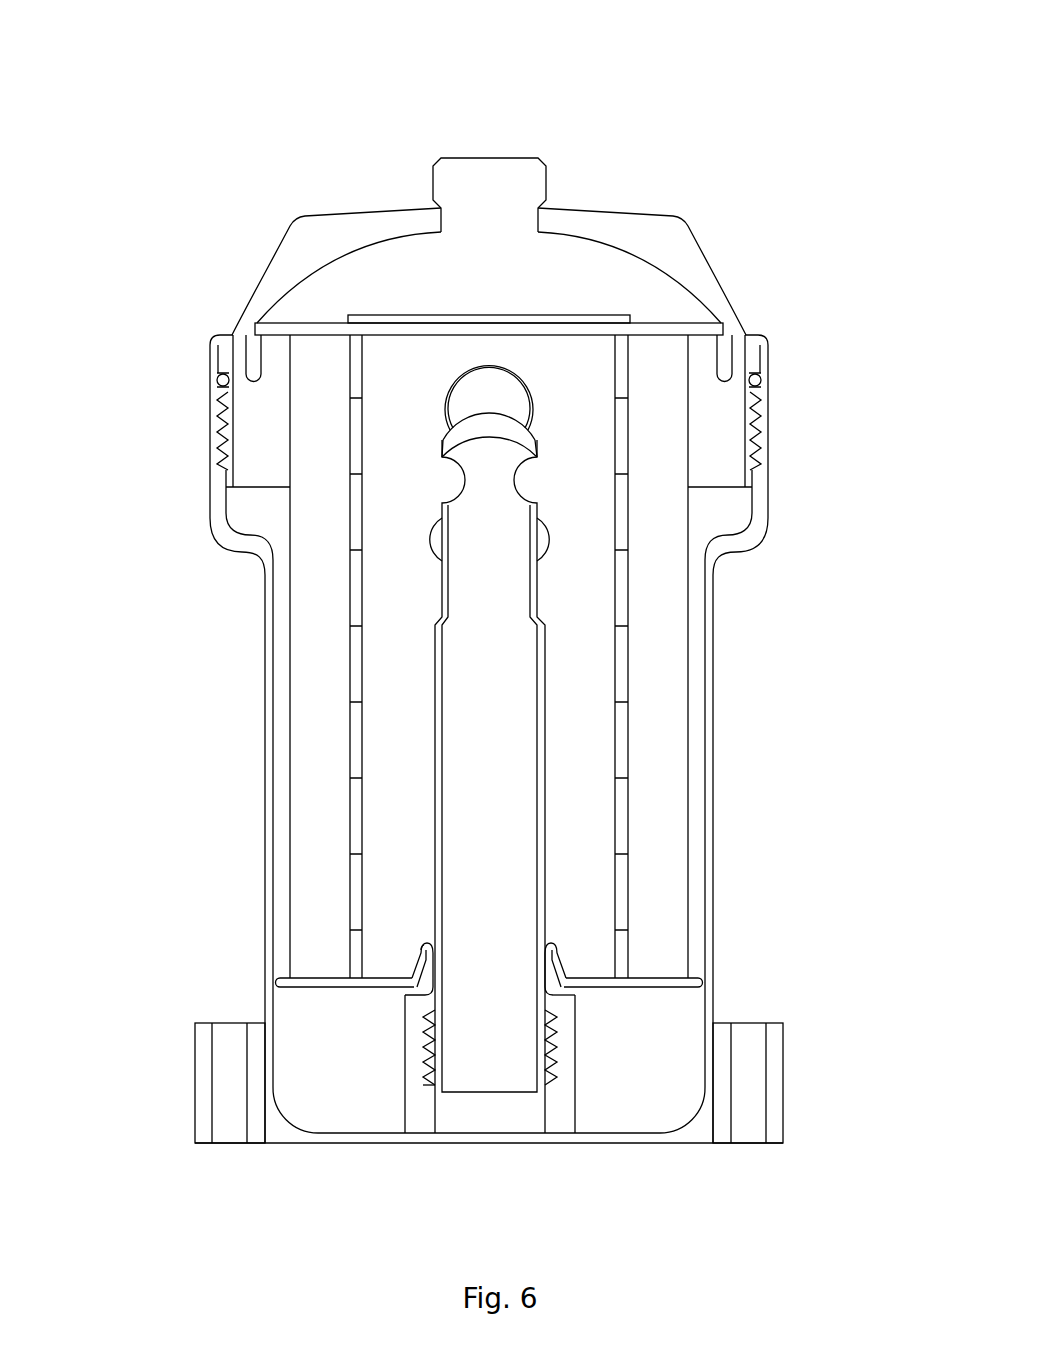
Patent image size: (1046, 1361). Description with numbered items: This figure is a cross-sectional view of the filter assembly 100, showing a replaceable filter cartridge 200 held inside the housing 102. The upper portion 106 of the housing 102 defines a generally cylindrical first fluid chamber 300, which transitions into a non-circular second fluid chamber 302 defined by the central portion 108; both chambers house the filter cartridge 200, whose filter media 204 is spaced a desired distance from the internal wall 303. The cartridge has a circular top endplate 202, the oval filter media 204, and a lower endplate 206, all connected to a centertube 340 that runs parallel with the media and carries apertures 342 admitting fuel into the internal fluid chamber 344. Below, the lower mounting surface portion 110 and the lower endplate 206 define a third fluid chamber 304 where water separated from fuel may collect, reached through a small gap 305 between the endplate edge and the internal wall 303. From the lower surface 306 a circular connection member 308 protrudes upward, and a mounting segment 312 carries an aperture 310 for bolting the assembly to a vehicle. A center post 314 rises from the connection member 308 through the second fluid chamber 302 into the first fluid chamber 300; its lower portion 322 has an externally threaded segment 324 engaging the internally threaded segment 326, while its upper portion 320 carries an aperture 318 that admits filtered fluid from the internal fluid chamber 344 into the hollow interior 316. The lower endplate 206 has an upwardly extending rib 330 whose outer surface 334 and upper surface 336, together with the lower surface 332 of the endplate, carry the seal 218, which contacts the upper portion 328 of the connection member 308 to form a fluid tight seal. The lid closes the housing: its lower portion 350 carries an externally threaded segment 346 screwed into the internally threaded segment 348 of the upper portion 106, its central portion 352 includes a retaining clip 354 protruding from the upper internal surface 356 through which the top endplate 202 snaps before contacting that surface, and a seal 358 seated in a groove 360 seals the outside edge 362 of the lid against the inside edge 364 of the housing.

The filter assembly 100 is at (486, 106).
The housing 102 is at (190, 620).
The upper portion 106 is at (772, 452).
The central portion 108 is at (715, 740).
The lower mounting surface portion 110 is at (782, 1080).
The filter cartridge 200 is at (283, 650).
The top endplate 202 is at (515, 322).
The filter media 204 is at (663, 718).
The lower endplate 206 is at (697, 980).
The seal 218 is at (574, 1000).
The first fluid chamber 300 is at (712, 456).
The second fluid chamber 302 is at (283, 795).
The internal wall 303 is at (228, 508).
The third fluid chamber 304 is at (652, 1100).
The gap 305 is at (275, 983).
The lower surface 306 is at (425, 1135).
The connection member 308 is at (560, 1108).
The aperture 310 is at (232, 1065).
The mounting segment 312 is at (245, 1021).
The center post 314 is at (555, 862).
The hollow interior 316 is at (495, 690).
The aperture 318 is at (532, 470).
The upper portion 320 is at (433, 475).
The lower portion 322 is at (420, 1050).
The externally threaded segment 324 is at (555, 1050).
The internally threaded segment 326 is at (430, 1082).
The upper portion 328 is at (405, 990).
The rib 330 is at (568, 962).
The lower surface 332 is at (578, 992).
The outer surface 334 is at (420, 960).
The upper surface 336 is at (420, 948).
The centertube 340 is at (627, 710).
The apertures 342 is at (527, 380).
The internal fluid chamber 344 is at (400, 612).
The externally threaded segment 346 is at (756, 400).
The internally threaded segment 348 is at (221, 425).
The lower portion 350 is at (257, 462).
The central portion 352 is at (231, 332).
The retaining clip 354 is at (732, 350).
The upper internal surface 356 is at (337, 316).
The seal 358 is at (757, 375).
The groove 360 is at (216, 379).
The outside edge 362 is at (211, 344).
The inside edge 364 is at (219, 393).